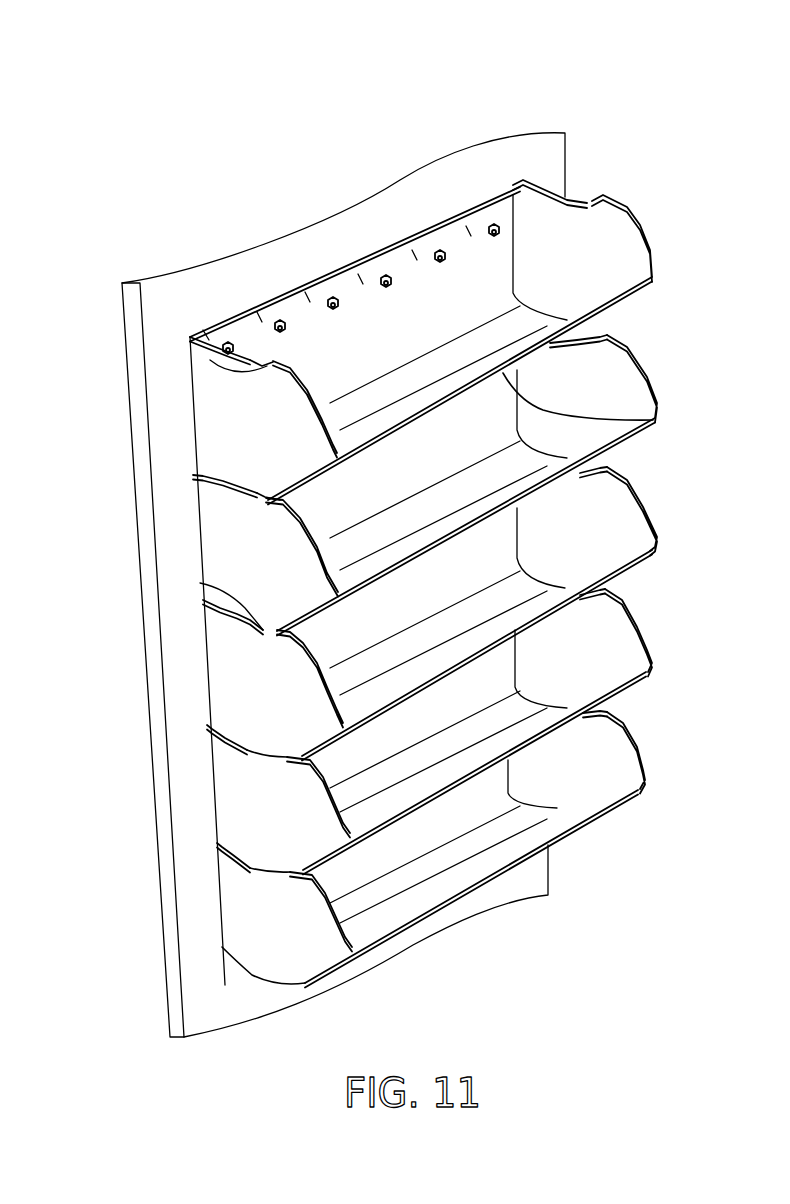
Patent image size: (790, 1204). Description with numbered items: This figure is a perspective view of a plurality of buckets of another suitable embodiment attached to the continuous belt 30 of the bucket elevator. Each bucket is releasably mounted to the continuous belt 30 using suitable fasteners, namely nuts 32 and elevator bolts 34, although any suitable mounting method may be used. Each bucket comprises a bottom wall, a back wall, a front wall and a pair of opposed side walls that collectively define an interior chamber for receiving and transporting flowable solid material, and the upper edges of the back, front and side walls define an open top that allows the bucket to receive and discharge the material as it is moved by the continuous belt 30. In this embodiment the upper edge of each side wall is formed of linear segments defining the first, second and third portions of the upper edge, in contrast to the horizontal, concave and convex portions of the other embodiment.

The continuous belt 30 is at (166, 887).
The nuts 32 is at (227, 345).
The elevator bolts 34 is at (205, 335).